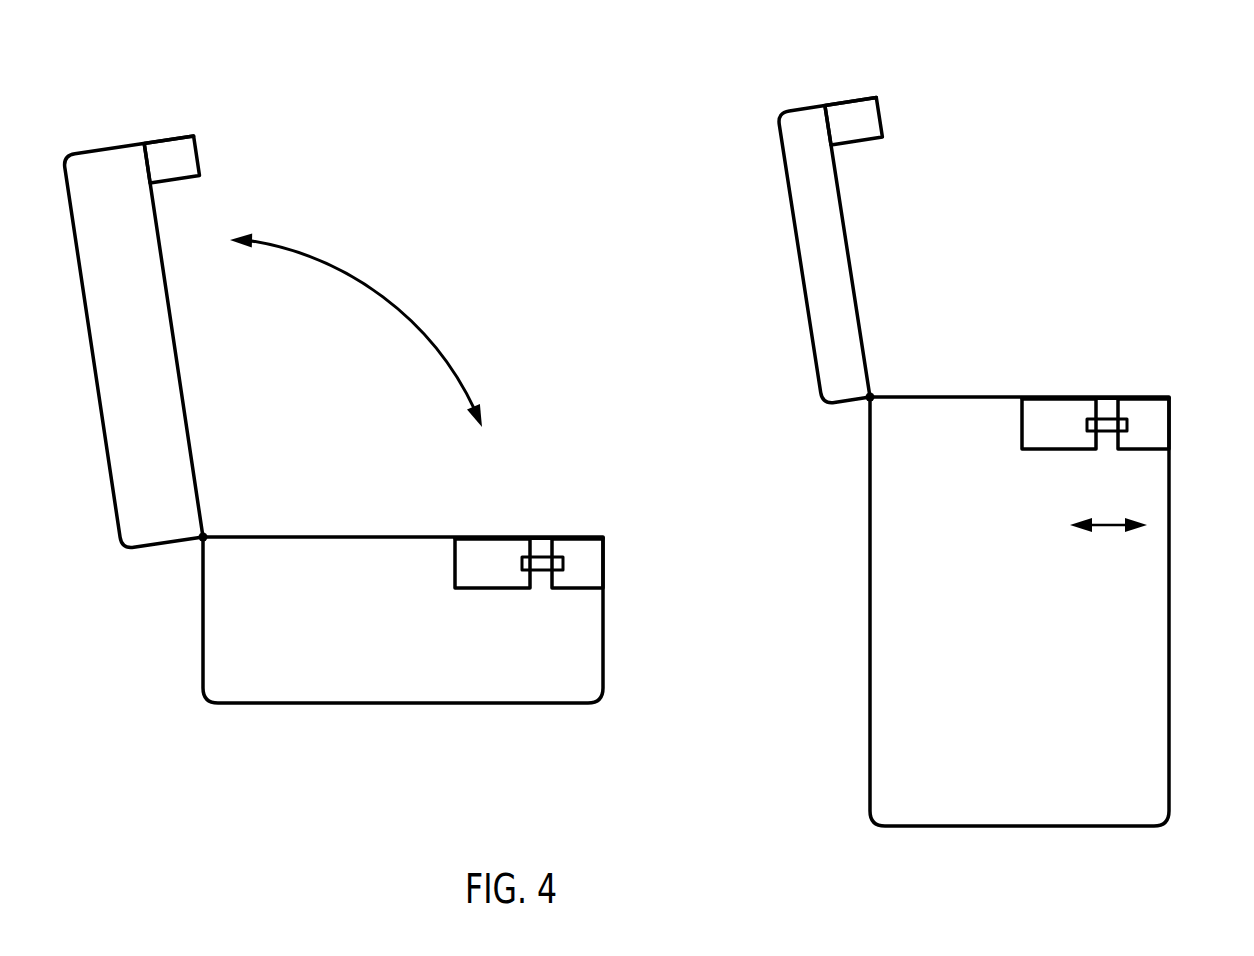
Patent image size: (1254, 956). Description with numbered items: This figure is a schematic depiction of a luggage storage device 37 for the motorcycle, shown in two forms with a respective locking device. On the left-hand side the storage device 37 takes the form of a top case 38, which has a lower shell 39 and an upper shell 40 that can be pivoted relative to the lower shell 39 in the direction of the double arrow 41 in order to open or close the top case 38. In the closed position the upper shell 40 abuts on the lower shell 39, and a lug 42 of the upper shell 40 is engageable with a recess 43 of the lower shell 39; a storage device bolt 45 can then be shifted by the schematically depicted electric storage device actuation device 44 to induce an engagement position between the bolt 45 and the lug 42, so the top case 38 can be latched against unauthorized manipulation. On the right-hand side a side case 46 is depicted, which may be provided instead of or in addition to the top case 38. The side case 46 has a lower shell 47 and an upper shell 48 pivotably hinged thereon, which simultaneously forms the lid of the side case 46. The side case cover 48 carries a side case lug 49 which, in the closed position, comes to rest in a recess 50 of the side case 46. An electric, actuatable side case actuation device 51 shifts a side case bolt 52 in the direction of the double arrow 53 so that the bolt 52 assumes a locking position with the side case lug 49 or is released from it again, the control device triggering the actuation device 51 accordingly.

The luggage storage device 37 is at (168, 712).
The top case 38 is at (622, 712).
The lower shell 39 is at (594, 663).
The upper shell 40 is at (89, 311).
The double arrow 41 is at (392, 300).
The lug 42 is at (194, 153).
The recess 43 is at (587, 548).
The storage device actuation device 44 is at (482, 548).
The storage device bolt 45 is at (543, 562).
The side case 46 is at (846, 833).
The lower shell 47 is at (1159, 784).
The upper shell 48 is at (800, 214).
The side case lug 49 is at (877, 118).
The recess 50 is at (1152, 407).
The side case actuation device 51 is at (1047, 410).
The side case bolt 52 is at (1108, 423).
The double arrow 53 is at (1108, 527).